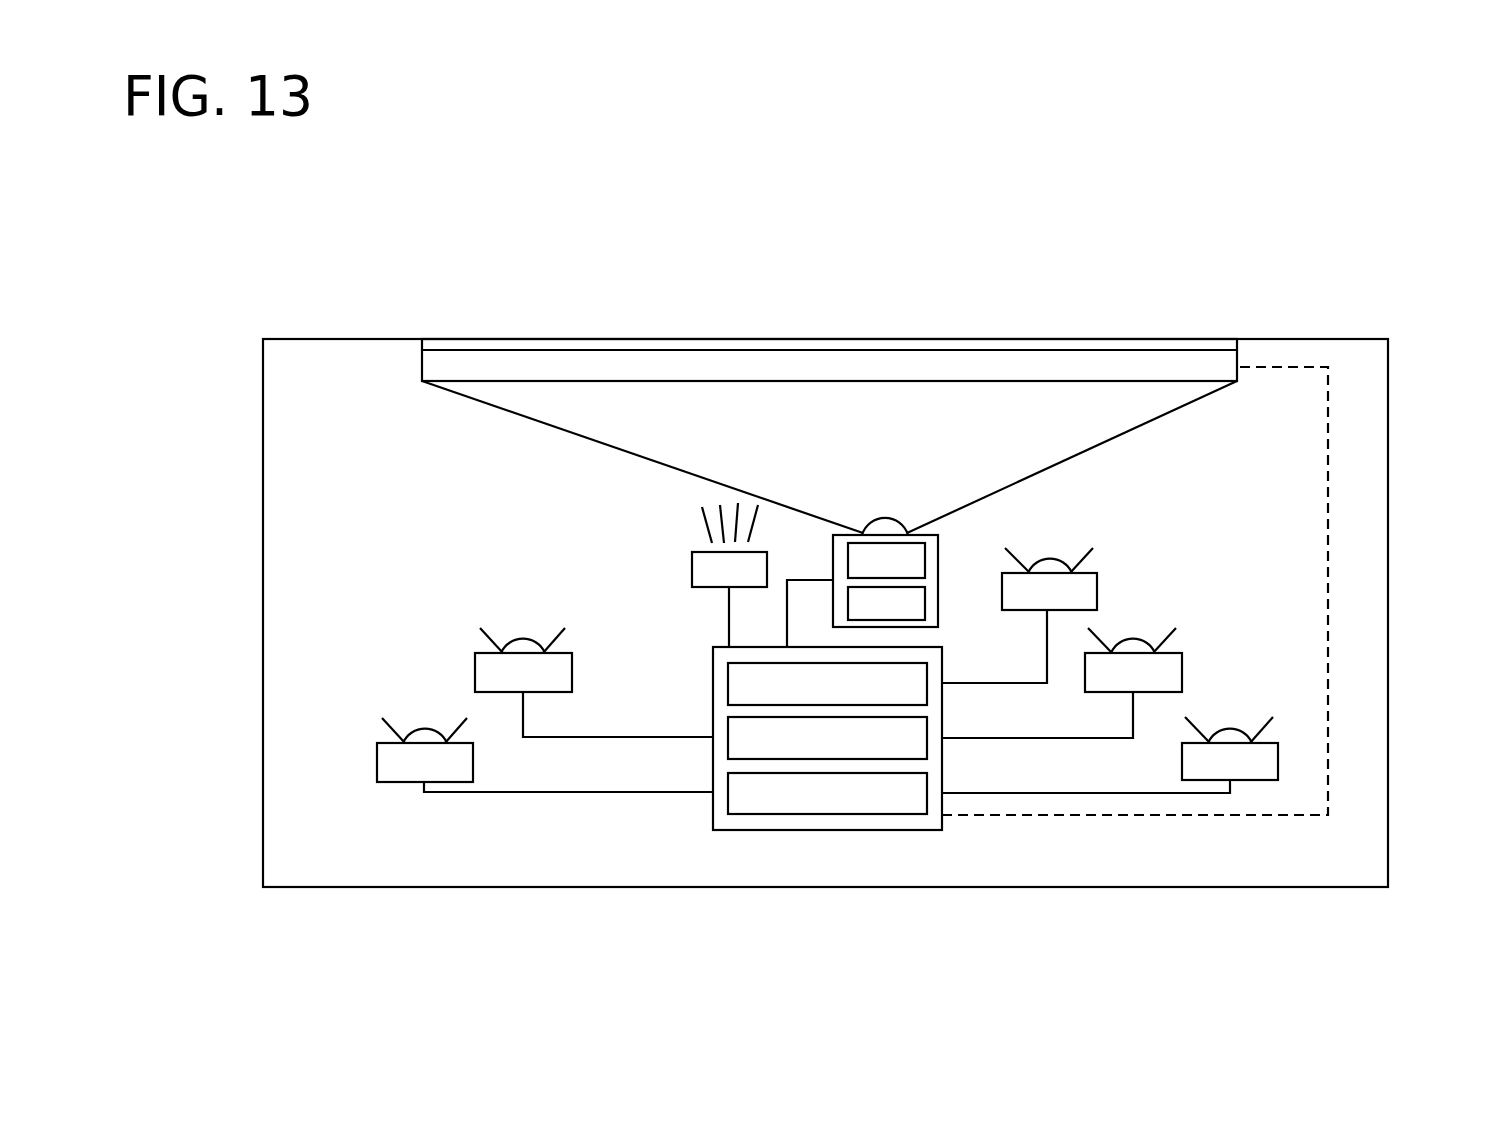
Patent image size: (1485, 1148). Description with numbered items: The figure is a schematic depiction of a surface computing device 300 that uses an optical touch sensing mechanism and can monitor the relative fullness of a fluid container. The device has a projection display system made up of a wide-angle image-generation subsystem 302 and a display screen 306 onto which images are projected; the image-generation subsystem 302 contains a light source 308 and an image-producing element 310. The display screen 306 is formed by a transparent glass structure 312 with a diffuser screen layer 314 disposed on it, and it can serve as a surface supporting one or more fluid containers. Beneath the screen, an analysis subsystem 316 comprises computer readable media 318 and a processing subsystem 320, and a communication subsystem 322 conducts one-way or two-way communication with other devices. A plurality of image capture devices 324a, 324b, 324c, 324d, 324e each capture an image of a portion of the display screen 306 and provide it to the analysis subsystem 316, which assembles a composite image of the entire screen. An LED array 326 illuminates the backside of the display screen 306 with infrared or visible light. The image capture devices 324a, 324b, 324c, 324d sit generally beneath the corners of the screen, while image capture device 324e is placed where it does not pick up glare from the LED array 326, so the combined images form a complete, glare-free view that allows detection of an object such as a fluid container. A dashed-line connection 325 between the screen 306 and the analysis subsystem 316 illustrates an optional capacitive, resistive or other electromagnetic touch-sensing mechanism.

The surface computing device 300 is at (360, 252).
The wide-angle image-generation subsystem 302 is at (940, 560).
The display screen 306 is at (487, 336).
The light source 308 is at (925, 603).
The image-producing element 310 is at (843, 560).
The transparent glass structure 312 is at (582, 367).
The diffuser screen layer 314 is at (666, 345).
The analysis subsystem 316 is at (713, 812).
The computer readable media 318 is at (728, 680).
The processing subsystem 320 is at (927, 730).
The communication subsystem 322 is at (927, 785).
The image capture device 324a is at (395, 768).
The image capture device 324b is at (490, 672).
The image capture device 324c is at (1165, 673).
The image capture device 324d is at (1262, 768).
The image capture device 324e is at (1085, 590).
The dashed-line connection 325 is at (1328, 583).
The LED array 326 is at (692, 570).